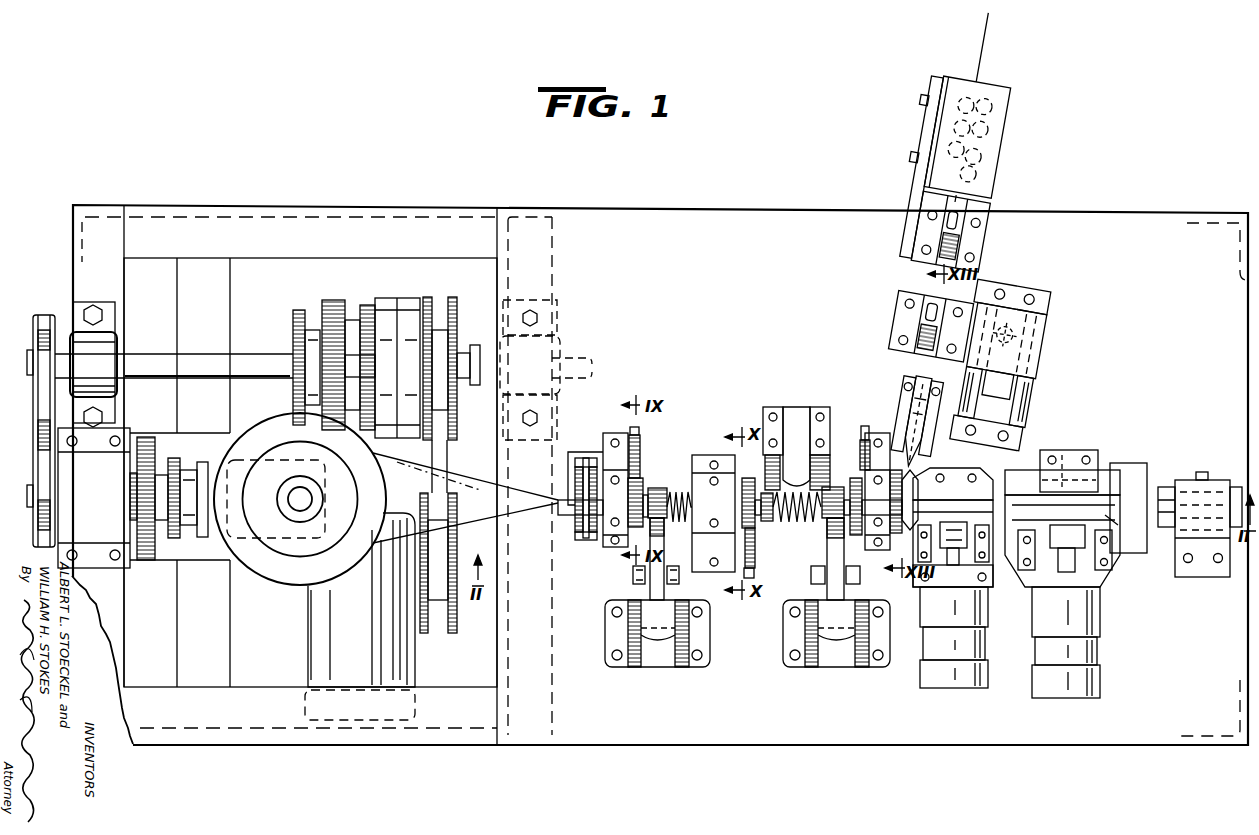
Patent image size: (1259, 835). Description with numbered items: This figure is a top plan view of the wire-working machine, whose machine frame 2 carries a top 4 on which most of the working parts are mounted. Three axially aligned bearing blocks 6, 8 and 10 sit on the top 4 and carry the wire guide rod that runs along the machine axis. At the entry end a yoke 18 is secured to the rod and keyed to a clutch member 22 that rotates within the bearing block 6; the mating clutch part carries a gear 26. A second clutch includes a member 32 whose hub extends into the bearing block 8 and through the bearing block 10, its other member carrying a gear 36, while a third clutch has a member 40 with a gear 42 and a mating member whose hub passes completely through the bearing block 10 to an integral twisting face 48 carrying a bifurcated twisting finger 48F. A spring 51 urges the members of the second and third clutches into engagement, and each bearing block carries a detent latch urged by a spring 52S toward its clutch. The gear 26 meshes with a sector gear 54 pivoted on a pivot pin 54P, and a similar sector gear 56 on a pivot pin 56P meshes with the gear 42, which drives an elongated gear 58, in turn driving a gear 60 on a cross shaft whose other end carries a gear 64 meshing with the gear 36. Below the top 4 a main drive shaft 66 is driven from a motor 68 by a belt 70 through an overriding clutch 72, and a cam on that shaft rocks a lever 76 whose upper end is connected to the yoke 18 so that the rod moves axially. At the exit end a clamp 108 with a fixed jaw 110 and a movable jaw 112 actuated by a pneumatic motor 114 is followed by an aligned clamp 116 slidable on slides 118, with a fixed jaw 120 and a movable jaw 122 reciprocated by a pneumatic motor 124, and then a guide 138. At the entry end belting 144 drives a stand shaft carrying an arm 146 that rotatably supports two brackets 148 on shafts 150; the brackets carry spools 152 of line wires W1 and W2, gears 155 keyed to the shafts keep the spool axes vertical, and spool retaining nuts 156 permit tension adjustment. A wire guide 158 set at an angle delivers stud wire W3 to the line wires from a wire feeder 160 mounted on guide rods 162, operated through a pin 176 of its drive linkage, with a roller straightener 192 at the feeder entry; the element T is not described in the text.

The machine frame 2 is at (418, 205).
The top 4 is at (406, 470).
The bearing block 6 is at (603, 440).
The bearing block 8 is at (702, 455).
The bearing block 10 is at (879, 433).
The yoke 18 is at (580, 518).
The clutch member 22 is at (621, 502).
The gear 26 is at (658, 488).
The clutch member 32 is at (745, 505).
The gear 36 is at (766, 522).
The clutch member 40 is at (856, 535).
The gear 42 is at (826, 518).
The twisting face 48 is at (882, 501).
The bifurcated twisting finger 48F is at (905, 475).
The spring 51 is at (803, 470).
The spring 52S is at (636, 465).
The sector gear 54 is at (664, 521).
The pivot pin 54P is at (612, 625).
The sector gear 56 is at (830, 540).
The pivot pin 56P is at (795, 633).
The elongated gear 58 is at (822, 455).
The gear 60 is at (796, 431).
The gear 64 is at (766, 472).
The main drive shaft 66 is at (585, 355).
The motor 68 is at (402, 665).
The belt 70 is at (445, 298).
The overriding clutch 72 is at (378, 300).
The lever 76 is at (592, 540).
The clamp 108 is at (973, 468).
The fixed jaw 110 is at (1007, 470).
The movable jaw 112 is at (953, 522).
The pneumatic motor 114 is at (978, 654).
The clamp 116 is at (1082, 450).
The slides 118 is at (1062, 450).
The fixed jaw 120 is at (1120, 468).
The movable jaw 122 is at (1127, 526).
The pneumatic motor 124 is at (1090, 655).
The guide 138 is at (1165, 490).
The belting 144 is at (43, 315).
The arm 146 is at (175, 458).
The brackets 148 is at (210, 545).
The shafts 150 is at (213, 495).
The spools 152 is at (275, 583).
The gears 155 is at (147, 437).
The spool retaining nuts 156 is at (310, 502).
The wire guide 158 is at (899, 395).
The wire feeder 160 is at (930, 274).
The guide rods 162 is at (1014, 412).
The pin 176 is at (1026, 332).
The roller straightener 192 is at (975, 176).
The line wire W1 is at (490, 522).
The line wire W2 is at (475, 470).
The stud wire W3 is at (989, 111).
The terminal T is at (528, 515).